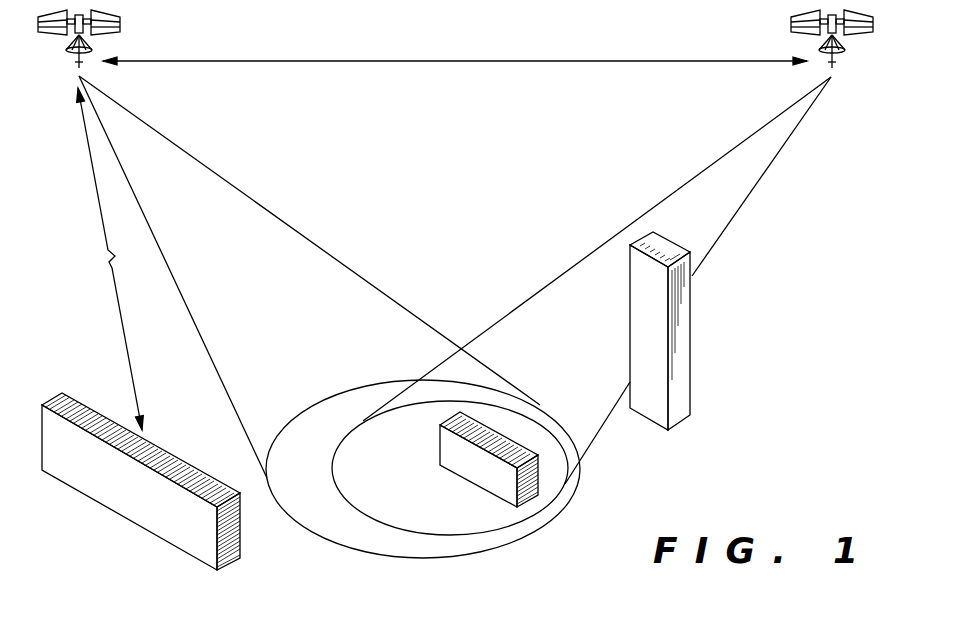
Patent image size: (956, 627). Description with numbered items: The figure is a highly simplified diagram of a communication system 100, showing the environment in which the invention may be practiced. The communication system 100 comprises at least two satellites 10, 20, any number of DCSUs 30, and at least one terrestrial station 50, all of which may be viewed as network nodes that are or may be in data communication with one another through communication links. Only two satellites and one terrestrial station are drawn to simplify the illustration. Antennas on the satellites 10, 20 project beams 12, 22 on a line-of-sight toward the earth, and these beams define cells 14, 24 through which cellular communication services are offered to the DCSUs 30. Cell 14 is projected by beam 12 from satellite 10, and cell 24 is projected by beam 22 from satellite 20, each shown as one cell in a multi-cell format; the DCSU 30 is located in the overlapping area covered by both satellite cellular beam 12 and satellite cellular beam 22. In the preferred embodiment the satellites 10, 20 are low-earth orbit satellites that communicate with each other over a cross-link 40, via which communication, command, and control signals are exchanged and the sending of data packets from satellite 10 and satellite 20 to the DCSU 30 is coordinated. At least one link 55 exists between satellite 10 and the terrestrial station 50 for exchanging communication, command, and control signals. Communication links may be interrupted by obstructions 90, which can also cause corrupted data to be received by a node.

The satellite 10 is at (118, 22).
The satellite 20 is at (793, 22).
The cross-link 40 is at (284, 58).
The beam 12 is at (179, 191).
The beam 22 is at (729, 204).
The link 55 is at (121, 345).
The terrestrial station 50 is at (131, 522).
The cell 14 is at (317, 532).
The cell 24 is at (332, 465).
The DCSU 30 is at (440, 434).
The obstruction 90 is at (693, 333).
The communication system 100 is at (812, 500).